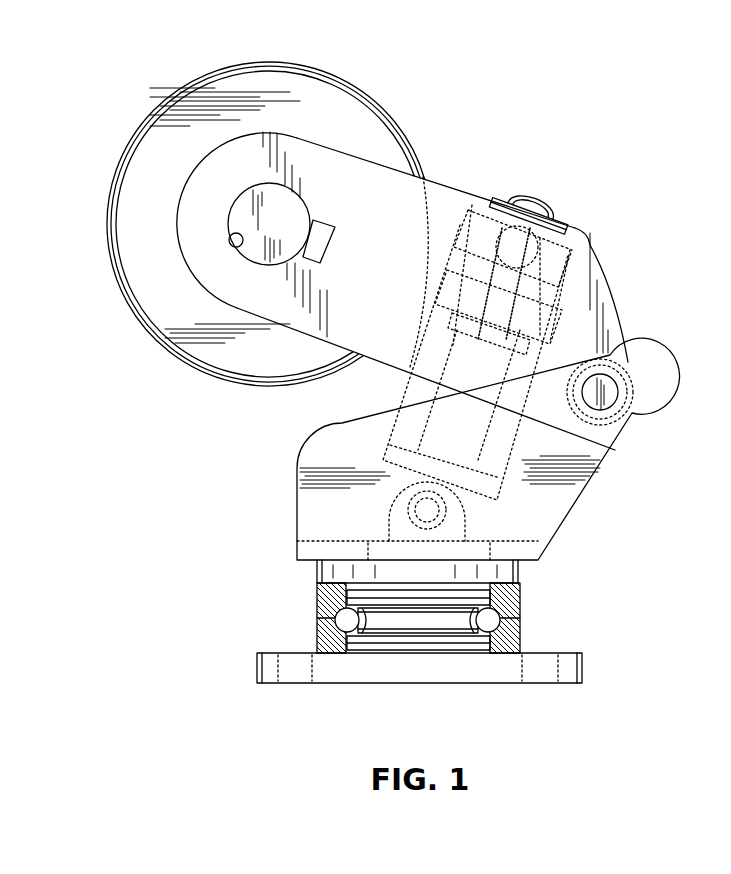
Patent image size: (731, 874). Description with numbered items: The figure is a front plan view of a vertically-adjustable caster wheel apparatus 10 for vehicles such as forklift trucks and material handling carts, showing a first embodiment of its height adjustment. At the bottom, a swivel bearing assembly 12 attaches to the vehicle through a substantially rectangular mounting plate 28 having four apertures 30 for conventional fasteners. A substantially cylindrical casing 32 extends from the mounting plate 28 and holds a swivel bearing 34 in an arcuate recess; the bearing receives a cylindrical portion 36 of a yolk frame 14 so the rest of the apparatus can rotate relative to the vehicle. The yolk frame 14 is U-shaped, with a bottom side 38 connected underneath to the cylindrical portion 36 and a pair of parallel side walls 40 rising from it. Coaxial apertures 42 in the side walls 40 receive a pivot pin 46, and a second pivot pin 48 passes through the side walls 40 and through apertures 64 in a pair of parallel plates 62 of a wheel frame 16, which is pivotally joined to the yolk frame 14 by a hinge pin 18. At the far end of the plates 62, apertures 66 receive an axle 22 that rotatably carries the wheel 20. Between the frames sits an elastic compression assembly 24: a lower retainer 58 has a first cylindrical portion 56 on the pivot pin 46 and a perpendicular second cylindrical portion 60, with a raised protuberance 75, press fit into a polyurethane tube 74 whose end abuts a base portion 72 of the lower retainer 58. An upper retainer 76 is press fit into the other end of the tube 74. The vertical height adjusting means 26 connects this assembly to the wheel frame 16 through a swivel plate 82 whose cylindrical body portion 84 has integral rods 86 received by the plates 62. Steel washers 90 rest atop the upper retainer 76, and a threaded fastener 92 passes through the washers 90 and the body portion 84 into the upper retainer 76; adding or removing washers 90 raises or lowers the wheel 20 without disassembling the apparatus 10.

The caster wheel apparatus 10 is at (532, 104).
The swivel bearing assembly 12 is at (548, 642).
The yolk frame 14 is at (583, 492).
The wheel frame 16 is at (607, 257).
The hinge pin 18 is at (608, 392).
The wheel 20 is at (338, 75).
The axle 22 is at (258, 230).
The elastic compression assembly 24 is at (355, 387).
The vertical height adjusting means 26 is at (595, 290).
The mounting plate 28 is at (582, 680).
The apertures 30 is at (312, 662).
The cylindrical casing 32 is at (317, 632).
The swivel bearing 34 is at (345, 622).
The cylindrical portion 36 is at (315, 575).
The bottom side 38 is at (528, 562).
The side walls 40 is at (307, 507).
The apertures 42 is at (467, 517).
The pivot pin 46 is at (425, 512).
The pivot pin 48 is at (630, 420).
The first cylindrical portion 56 is at (395, 492).
The lower retainer 58 is at (510, 493).
The second cylindrical portion 60 is at (412, 452).
The plates 62 is at (583, 228).
The apertures 64 is at (630, 350).
The apertures 66 is at (238, 250).
The base portion 72 is at (410, 478).
The polyurethane tube 74 is at (421, 342).
The raised protuberance 75 is at (392, 410).
The upper retainer 76 is at (447, 204).
The swivel plate 82 is at (607, 247).
The cylindrical body portion 84 is at (474, 205).
The cylindrical rods 86 is at (603, 263).
The steel washers 90 is at (581, 275).
The threaded fastener 92 is at (523, 190).